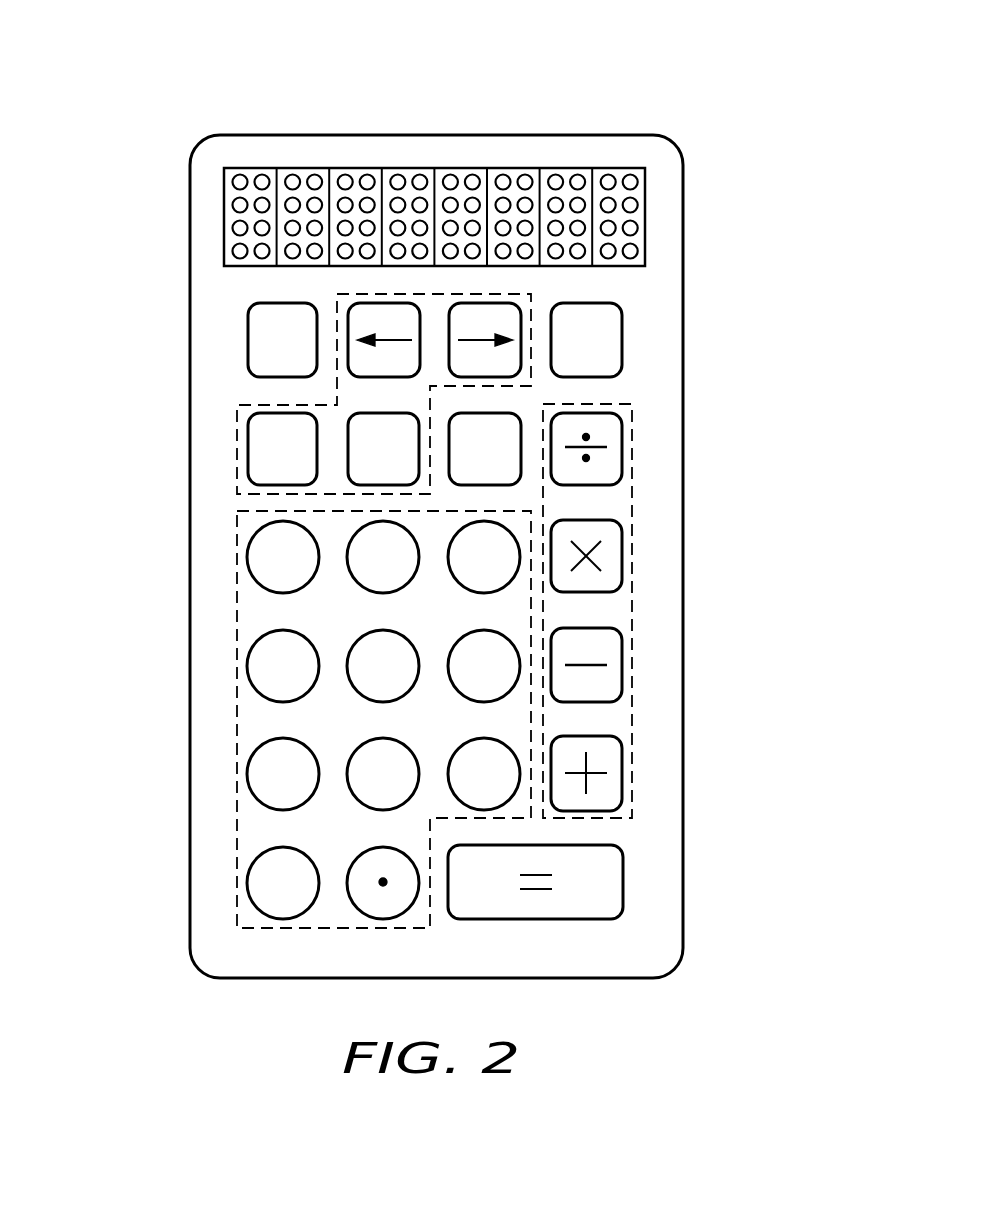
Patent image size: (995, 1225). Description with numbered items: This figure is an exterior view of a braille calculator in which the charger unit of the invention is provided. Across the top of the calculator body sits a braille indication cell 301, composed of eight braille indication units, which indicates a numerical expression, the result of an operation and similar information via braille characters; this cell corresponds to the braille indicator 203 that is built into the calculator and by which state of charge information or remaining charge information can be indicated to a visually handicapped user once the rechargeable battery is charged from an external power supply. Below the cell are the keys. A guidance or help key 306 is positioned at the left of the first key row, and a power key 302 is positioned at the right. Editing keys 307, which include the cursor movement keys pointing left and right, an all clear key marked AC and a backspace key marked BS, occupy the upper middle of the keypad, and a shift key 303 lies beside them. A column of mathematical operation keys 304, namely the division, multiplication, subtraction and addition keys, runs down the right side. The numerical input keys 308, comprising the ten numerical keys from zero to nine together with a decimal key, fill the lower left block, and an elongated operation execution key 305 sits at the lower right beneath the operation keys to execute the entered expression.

The braille indicator 203 is at (627, 166).
The braille indication cell 301 is at (299, 168).
The power key 302 is at (622, 318).
The shift key 303 is at (485, 413).
The mathematical operation keys 304 is at (632, 612).
The operation execution key 305 is at (623, 880).
The guidance or help key 306 is at (248, 343).
The editing keys 307 is at (237, 444).
The numerical input keys 308 is at (237, 830).